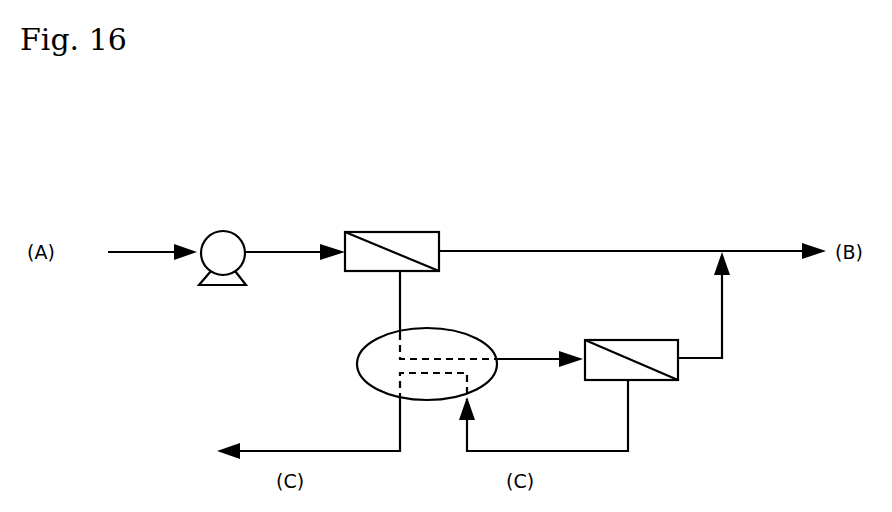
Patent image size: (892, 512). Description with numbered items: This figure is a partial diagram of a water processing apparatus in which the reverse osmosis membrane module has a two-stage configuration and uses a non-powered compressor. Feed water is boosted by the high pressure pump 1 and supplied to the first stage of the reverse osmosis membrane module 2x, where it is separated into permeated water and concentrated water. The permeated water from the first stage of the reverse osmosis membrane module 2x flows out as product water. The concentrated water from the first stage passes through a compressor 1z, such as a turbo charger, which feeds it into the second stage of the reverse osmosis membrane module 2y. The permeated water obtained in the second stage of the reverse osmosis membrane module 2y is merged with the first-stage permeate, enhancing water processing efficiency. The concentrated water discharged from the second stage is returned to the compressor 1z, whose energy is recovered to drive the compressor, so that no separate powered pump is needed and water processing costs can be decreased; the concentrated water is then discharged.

The high pressure pump 1 is at (234, 233).
The first stage of the reverse osmosis membrane module 2x is at (397, 232).
The second stage of the reverse osmosis membrane module 2y is at (627, 340).
The compressor 1z is at (357, 365).